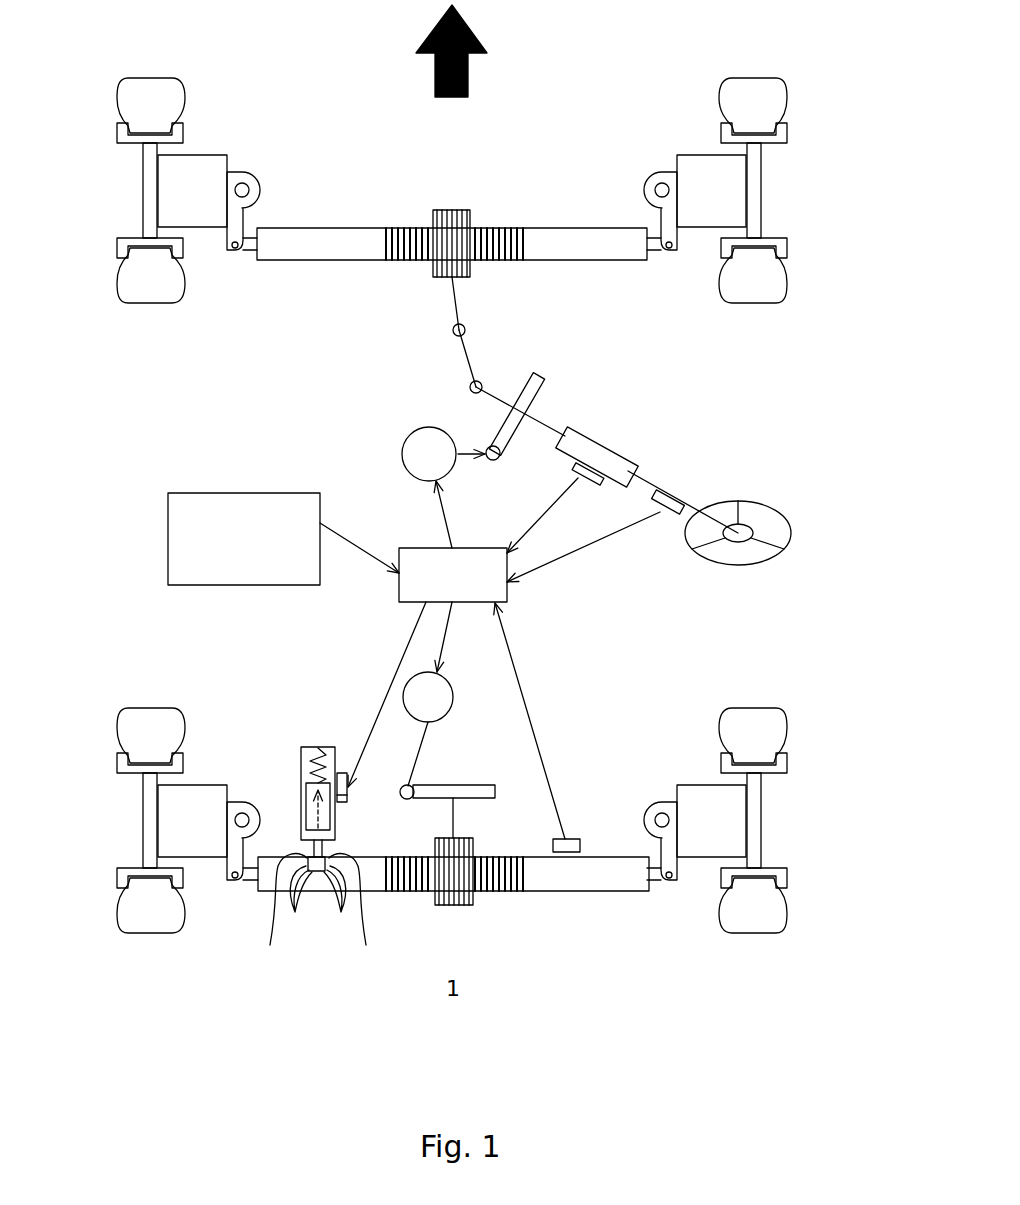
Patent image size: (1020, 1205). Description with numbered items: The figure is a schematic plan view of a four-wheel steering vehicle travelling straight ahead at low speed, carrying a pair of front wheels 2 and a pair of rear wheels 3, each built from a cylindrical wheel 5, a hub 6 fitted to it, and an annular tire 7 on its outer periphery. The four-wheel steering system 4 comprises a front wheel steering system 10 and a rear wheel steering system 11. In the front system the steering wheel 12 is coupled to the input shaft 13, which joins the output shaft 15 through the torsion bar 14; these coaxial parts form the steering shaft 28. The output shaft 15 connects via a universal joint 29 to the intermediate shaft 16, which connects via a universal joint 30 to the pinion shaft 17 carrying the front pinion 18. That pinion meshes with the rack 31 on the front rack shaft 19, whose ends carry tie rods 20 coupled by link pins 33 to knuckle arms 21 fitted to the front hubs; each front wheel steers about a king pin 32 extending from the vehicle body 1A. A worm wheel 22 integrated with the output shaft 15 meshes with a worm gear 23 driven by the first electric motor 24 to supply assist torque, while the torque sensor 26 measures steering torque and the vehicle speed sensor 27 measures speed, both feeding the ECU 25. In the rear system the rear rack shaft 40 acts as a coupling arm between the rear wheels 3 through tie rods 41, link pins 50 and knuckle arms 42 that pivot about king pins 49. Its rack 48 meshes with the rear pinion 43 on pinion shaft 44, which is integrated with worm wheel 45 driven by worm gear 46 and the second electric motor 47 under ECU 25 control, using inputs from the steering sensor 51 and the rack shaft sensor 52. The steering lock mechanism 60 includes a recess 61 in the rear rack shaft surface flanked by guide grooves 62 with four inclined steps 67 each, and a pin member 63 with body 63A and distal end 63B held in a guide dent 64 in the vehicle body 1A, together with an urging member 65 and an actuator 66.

The vehicle body 1A is at (275, 838).
The front wheel 2 is at (143, 78).
The rear wheel 3 is at (143, 705).
The four-wheel steering system 4 is at (700, 482).
The wheel 5 is at (122, 139).
The hub 6 is at (204, 163).
The tire 7 is at (160, 86).
The front wheel steering system 10 is at (388, 415).
The rear wheel steering system 11 is at (362, 680).
The steering wheel 12 is at (762, 565).
The input shaft 13 is at (650, 482).
The torsion bar 14 is at (600, 450).
The output shaft 15 is at (556, 428).
The intermediate shaft 16 is at (470, 358).
The pinion shaft 17 is at (458, 300).
The front pinion 18 is at (451, 222).
The front rack shaft 19 is at (584, 261).
The tie rod 20 is at (249, 251).
The knuckle arm 21 is at (242, 174).
The worm wheel 22 is at (516, 430).
The worm gear 23 is at (494, 462).
The first electric motor 24 is at (402, 454).
The electronic control unit 25 is at (477, 602).
The torque sensor 26 is at (590, 484).
The vehicle speed sensor 27 is at (250, 493).
The steering shaft 28 is at (573, 380).
The universal joint 29 is at (470, 387).
The universal joint 30 is at (453, 330).
The rack 31 is at (412, 233).
The king pin 32 is at (250, 190).
The link pin 33 is at (233, 249).
The rear rack shaft 40 is at (560, 883).
The tie rod 41 is at (250, 881).
The knuckle arm 42 is at (233, 805).
The rear pinion 43 is at (472, 846).
The pinion shaft 44 is at (456, 812).
The worm wheel 45 is at (485, 785).
The worm gear 46 is at (413, 789).
The second electric motor 47 is at (454, 696).
The rack 48 is at (495, 881).
The king pin 49 is at (242, 822).
The link pin 50 is at (233, 880).
The steering sensor 51 is at (671, 514).
The rack shaft sensor 52 is at (570, 840).
The steering lock mechanism 60 is at (320, 748).
The recess 61 is at (318, 874).
The guide groove 62 is at (316, 912).
The pin member 63 is at (192, 728).
The body 63A is at (306, 822).
The distal end 63B is at (301, 814).
The guide dent 64 is at (348, 780).
The urging member 65 is at (325, 770).
The actuator 66 is at (347, 798).
The step 67 is at (319, 904).